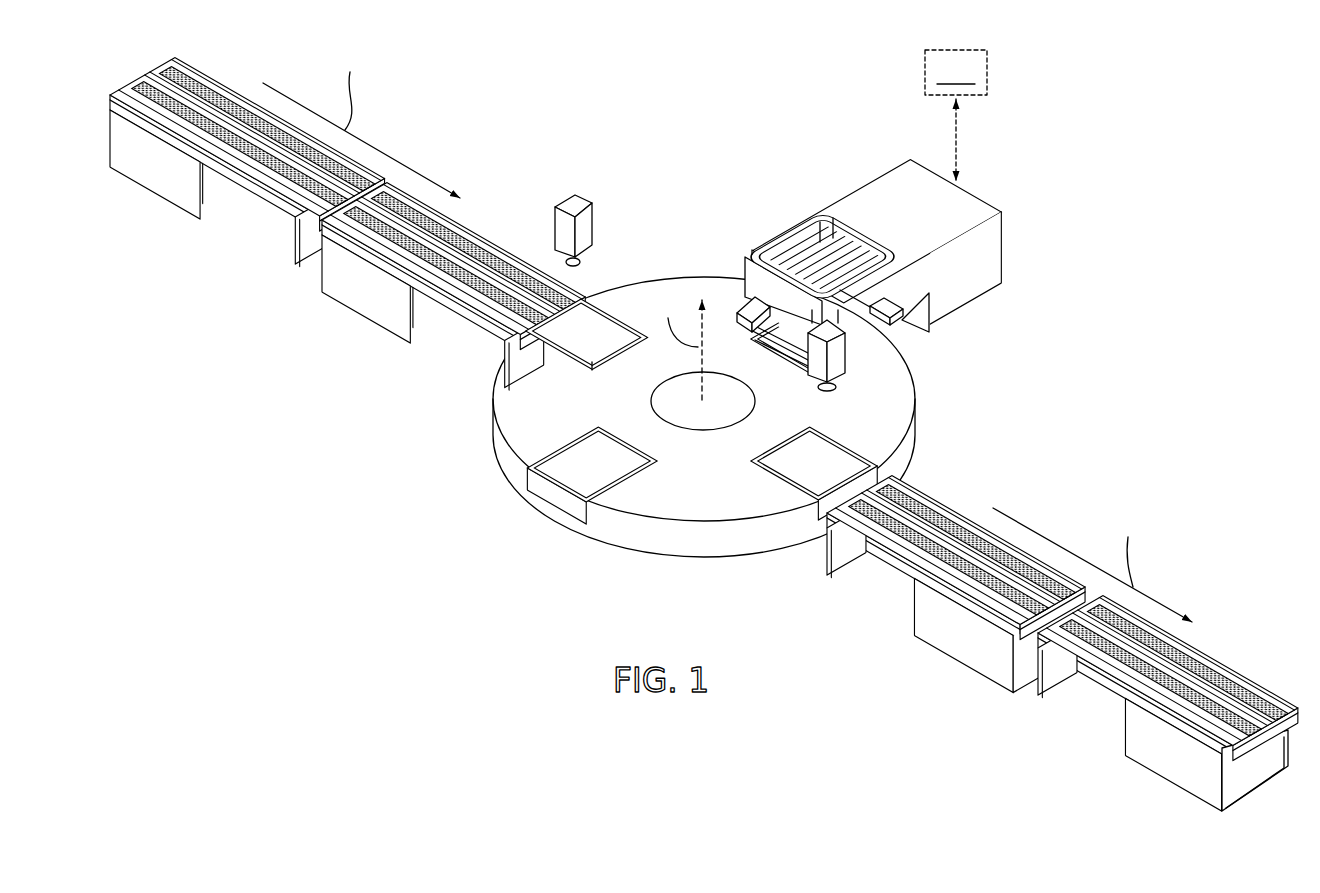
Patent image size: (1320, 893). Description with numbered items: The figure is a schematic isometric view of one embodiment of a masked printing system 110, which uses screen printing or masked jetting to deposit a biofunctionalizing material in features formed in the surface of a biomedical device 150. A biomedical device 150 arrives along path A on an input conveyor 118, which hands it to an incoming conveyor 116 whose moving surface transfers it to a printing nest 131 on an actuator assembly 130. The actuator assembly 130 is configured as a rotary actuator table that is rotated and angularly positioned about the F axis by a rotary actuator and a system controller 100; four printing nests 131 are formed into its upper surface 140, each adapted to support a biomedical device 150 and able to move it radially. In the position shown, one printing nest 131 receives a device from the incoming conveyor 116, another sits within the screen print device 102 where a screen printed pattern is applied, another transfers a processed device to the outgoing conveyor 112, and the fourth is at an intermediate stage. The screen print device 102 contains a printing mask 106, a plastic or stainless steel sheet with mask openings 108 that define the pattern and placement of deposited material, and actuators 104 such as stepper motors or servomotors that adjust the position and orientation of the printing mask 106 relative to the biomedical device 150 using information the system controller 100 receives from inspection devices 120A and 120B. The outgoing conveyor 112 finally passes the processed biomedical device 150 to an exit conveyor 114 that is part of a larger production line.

The system controller 100 is at (742, 262).
The screen print device 102 is at (968, 212).
The actuators 104 is at (887, 300).
The printing mask 106 is at (826, 224).
The mask openings 108 is at (847, 267).
The masked printing system 110 is at (704, 416).
The outgoing conveyor 112 is at (948, 653).
The exit conveyor 114 is at (1100, 680).
The incoming conveyor 116 is at (355, 308).
The input conveyor 118 is at (155, 197).
The inspection device 120A is at (899, 229).
The inspection device 120B is at (753, 213).
The actuator assembly 130 is at (720, 477).
The printing nest 131 is at (680, 402).
The upper surface 140 is at (583, 172).
The biomedical device 150 is at (594, 332).